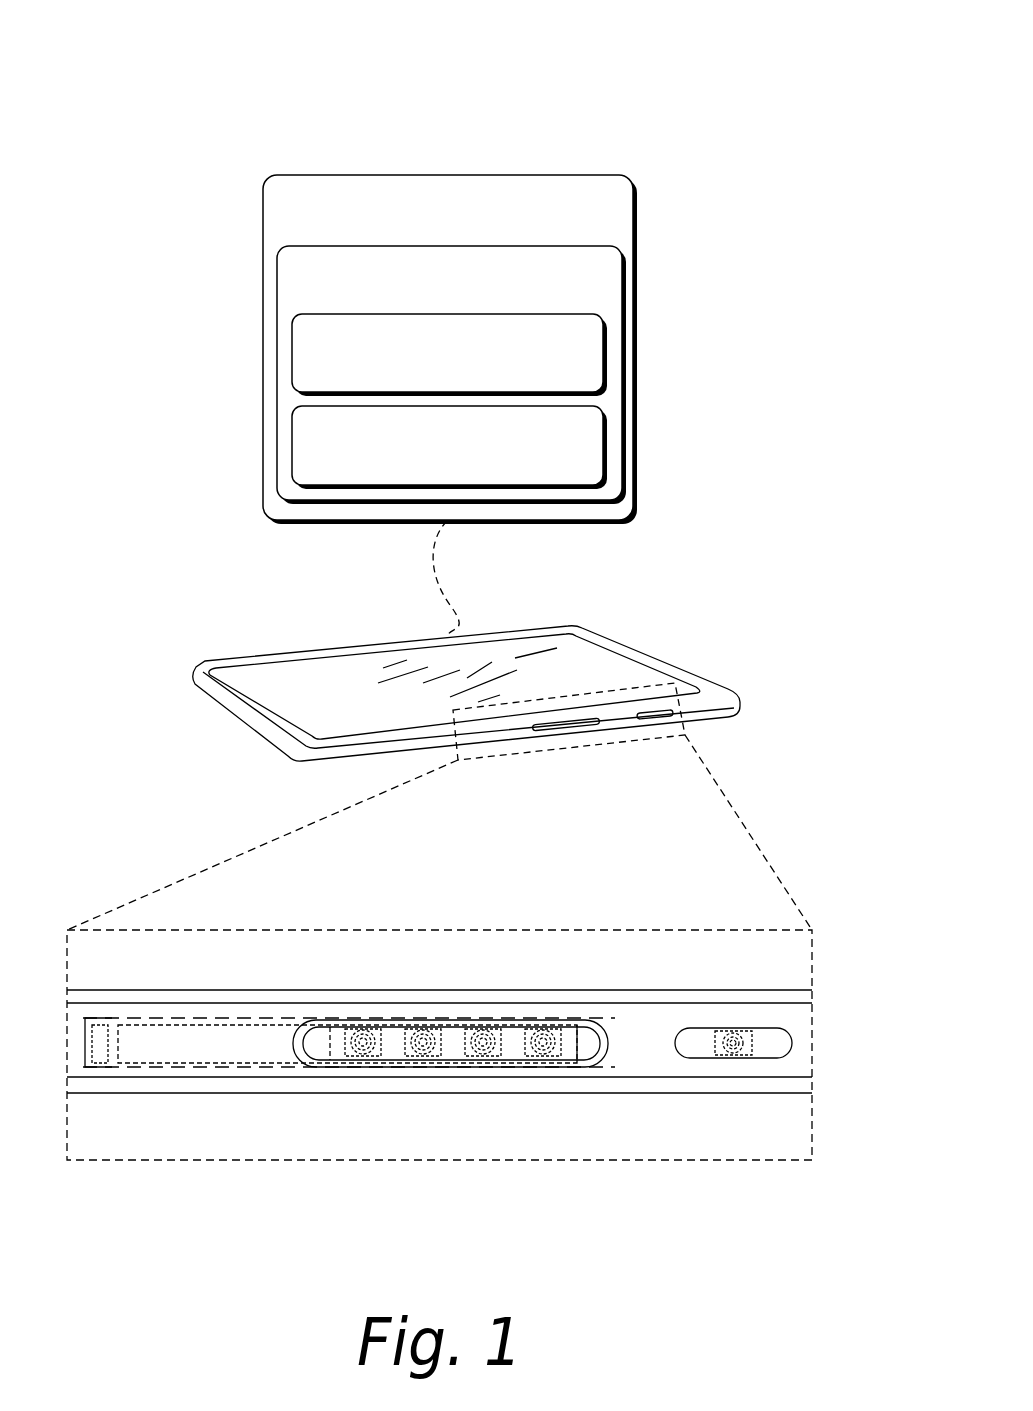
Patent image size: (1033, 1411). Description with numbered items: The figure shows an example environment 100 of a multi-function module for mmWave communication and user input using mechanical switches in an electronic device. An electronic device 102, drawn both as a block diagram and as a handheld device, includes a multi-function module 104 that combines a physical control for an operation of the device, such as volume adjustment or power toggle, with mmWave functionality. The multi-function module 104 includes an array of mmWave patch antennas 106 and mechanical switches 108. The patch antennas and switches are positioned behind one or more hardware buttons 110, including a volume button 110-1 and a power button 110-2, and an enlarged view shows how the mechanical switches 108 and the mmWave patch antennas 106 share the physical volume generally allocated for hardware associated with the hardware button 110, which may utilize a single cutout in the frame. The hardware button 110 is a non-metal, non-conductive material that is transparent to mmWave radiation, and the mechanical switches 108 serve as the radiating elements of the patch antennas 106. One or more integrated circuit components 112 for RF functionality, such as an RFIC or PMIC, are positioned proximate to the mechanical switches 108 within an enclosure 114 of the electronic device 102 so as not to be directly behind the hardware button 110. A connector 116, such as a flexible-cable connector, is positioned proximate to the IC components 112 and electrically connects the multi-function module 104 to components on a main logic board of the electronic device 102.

The environment 100 is at (100, 30).
The electronic device 102 is at (429, 235).
The multi-function module 104 is at (429, 305).
The mmWave patch antennas 106 is at (429, 375).
The mechanical switches 108 is at (429, 465).
The hardware button 110 is at (648, 716).
The volume button 110-1 is at (607, 1040).
The power button 110-2 is at (787, 1030).
The integrated circuit components 112 is at (215, 1063).
The enclosure 114 is at (213, 1003).
The connector 116 is at (93, 1045).